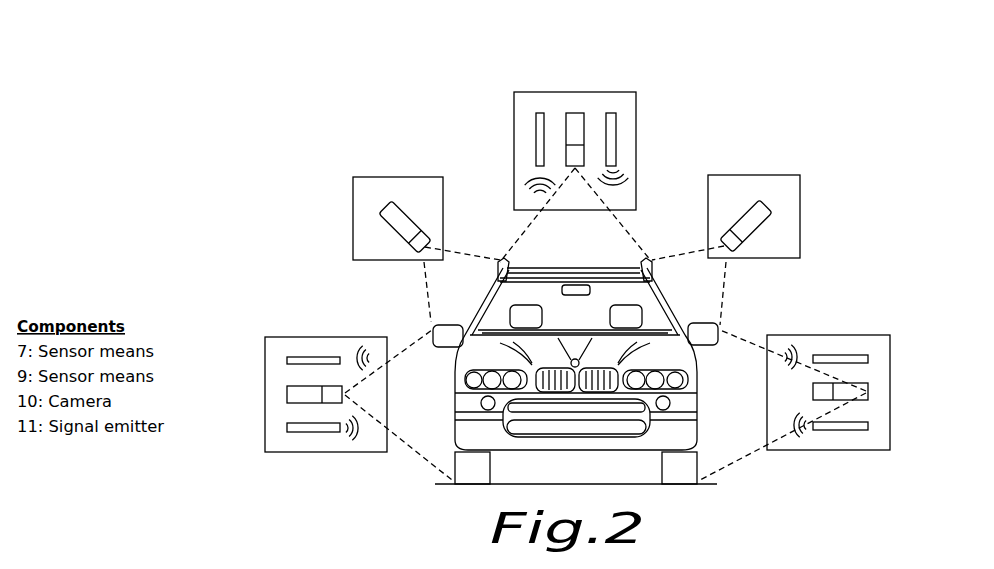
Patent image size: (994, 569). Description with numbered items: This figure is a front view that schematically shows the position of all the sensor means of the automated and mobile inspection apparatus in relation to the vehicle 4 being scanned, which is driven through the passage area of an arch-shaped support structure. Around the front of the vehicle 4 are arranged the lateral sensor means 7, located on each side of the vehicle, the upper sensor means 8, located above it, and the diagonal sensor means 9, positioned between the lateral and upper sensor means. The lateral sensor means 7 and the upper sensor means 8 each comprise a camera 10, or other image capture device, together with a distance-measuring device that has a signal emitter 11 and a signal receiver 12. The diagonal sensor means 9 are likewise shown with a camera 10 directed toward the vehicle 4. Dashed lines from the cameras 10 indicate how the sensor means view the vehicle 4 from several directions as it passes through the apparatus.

The vehicle 4 is at (459, 402).
The lateral sensor means 7 is at (265, 367).
The upper sensor means 8 is at (597, 92).
The diagonal sensor means 9 is at (353, 200).
The camera 10 is at (575, 120).
The signal emitter 11 is at (612, 138).
The signal receiver 12 is at (540, 138).